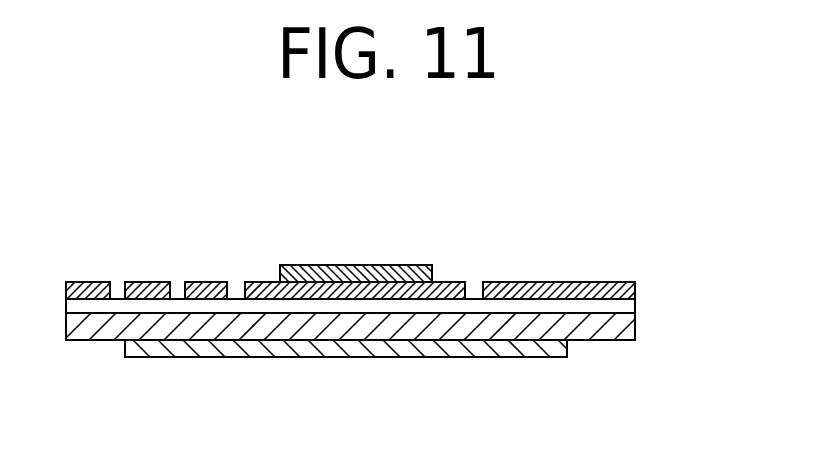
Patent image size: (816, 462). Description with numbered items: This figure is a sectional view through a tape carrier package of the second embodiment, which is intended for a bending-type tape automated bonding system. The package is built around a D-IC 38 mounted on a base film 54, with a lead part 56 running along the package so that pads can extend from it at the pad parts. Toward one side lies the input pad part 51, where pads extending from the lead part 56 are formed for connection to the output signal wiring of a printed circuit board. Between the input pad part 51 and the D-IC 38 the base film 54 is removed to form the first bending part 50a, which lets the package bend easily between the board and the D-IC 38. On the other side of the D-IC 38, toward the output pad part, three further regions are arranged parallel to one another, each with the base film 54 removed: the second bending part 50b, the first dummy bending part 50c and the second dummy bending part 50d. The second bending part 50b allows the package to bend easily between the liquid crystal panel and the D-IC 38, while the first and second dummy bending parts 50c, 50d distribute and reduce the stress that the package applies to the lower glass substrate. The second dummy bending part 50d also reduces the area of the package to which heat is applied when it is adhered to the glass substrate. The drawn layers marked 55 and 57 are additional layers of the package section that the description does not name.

The D-IC 38 is at (363, 265).
The first bending part 50a is at (472, 287).
The second bending part 50b is at (235, 287).
The first dummy bending part 50c is at (170, 287).
The second dummy bending part 50d is at (113, 287).
The input pad part 51 is at (398, 326).
The base film 54 is at (386, 253).
The insulating layer 55 is at (632, 300).
The lead part 56 is at (627, 328).
The back conductive layer 57 is at (462, 358).